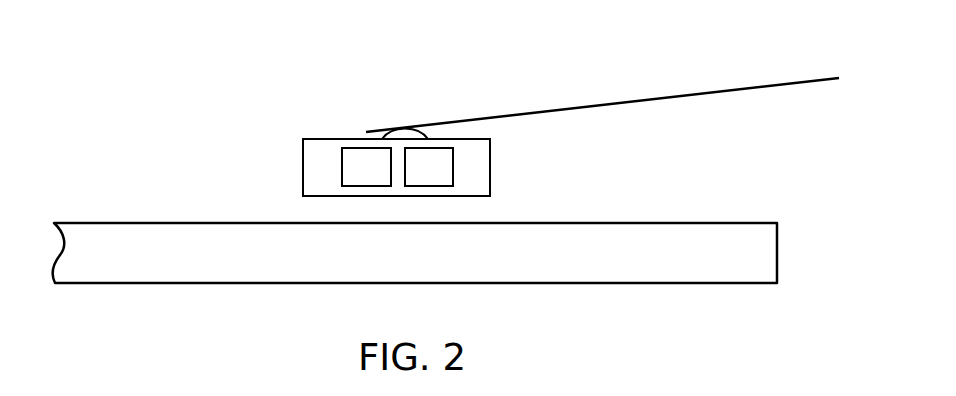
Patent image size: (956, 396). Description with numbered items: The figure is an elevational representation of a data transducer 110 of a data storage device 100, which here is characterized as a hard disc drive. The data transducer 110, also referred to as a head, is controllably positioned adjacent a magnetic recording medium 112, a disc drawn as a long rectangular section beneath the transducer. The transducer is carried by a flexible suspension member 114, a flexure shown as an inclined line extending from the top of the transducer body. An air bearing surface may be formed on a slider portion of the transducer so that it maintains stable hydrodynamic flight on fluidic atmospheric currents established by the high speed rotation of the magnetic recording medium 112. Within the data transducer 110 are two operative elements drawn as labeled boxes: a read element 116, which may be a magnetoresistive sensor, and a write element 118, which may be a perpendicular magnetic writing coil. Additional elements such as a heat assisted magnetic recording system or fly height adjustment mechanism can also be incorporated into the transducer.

The data storage device 100 is at (168, 116).
The data transducer 110 is at (330, 139).
The magnetic recording medium 112 is at (660, 221).
The flexible suspension member 114 is at (608, 104).
The read element 116 is at (342, 168).
The write element 118 is at (453, 167).